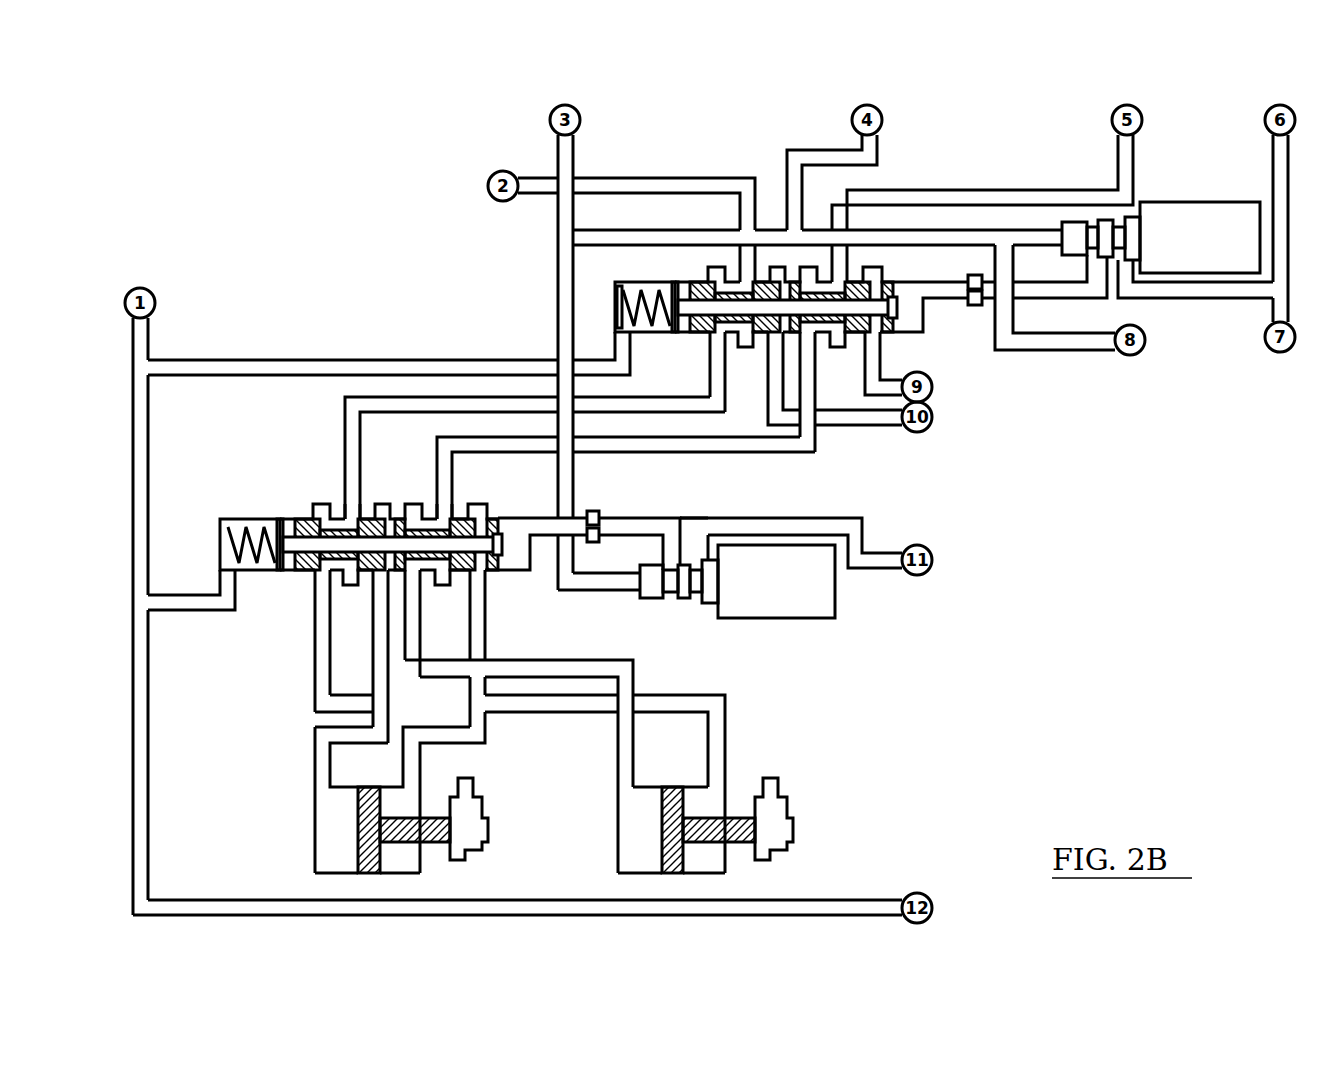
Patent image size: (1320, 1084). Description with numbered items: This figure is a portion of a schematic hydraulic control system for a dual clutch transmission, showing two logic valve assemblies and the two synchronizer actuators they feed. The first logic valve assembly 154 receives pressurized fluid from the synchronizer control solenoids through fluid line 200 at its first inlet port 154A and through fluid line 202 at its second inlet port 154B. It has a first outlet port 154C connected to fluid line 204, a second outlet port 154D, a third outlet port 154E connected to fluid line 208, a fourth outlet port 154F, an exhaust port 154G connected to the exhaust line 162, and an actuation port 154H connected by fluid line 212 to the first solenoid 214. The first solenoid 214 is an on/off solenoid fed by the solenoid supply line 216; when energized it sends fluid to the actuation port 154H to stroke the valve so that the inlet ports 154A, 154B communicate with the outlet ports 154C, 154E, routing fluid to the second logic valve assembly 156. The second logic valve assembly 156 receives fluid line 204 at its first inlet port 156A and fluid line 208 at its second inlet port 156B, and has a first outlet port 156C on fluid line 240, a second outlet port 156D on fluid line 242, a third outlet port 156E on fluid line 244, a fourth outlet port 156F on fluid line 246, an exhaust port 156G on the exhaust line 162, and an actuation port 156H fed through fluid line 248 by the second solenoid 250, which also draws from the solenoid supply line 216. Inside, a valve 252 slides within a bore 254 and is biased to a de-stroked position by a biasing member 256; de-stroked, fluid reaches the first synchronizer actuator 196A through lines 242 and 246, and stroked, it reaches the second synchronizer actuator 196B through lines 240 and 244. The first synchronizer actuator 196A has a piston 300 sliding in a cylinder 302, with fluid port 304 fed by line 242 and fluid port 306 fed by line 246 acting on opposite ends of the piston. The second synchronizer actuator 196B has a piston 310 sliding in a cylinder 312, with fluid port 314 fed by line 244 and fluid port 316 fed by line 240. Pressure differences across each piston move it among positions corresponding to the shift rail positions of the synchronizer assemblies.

The first logic valve assembly 154 is at (620, 283).
The first inlet port 154A is at (746, 282).
The second inlet port 154B is at (838, 282).
The first outlet port 154C is at (720, 336).
The second outlet port 154D is at (778, 336).
The third outlet port 154E is at (808, 336).
The fourth outlet port 154F is at (872, 336).
The exhaust port 154G is at (625, 330).
The actuation port 154H is at (912, 292).
The second logic valve assembly 156 is at (225, 519).
The first inlet port 156A is at (350, 519).
The second inlet port 156B is at (442, 519).
The first outlet port 156C is at (323, 575).
The second outlet port 156D is at (380, 575).
The third outlet port 156E is at (412, 575).
The fourth outlet port 156F is at (478, 575).
The exhaust port 156G is at (230, 580).
The actuation port 156H is at (527, 520).
The exhaust line 162 is at (178, 898).
The first synchronizer actuator 196A is at (383, 823).
The second synchronizer actuator 196B is at (687, 823).
The fluid line 200 is at (693, 178).
The fluid line 202 is at (1020, 190).
The fluid line 204 is at (388, 397).
The fluid line 208 is at (752, 455).
The fluid line 212 is at (1042, 298).
The first solenoid 214 is at (1220, 255).
The solenoid supply line 216 is at (577, 155).
The fluid line 240 is at (315, 702).
The fluid line 242 is at (315, 738).
The fluid line 244 is at (596, 660).
The fluid line 246 is at (487, 725).
The fluid line 248 is at (700, 518).
The second solenoid 250 is at (795, 593).
The valve 252 is at (620, 318).
The bore 254 is at (618, 300).
The biasing member 256 is at (248, 528).
The piston 300 is at (358, 870).
The piston housing or cylinder 302 is at (420, 868).
The fluid port 304 is at (323, 782).
The fluid port 306 is at (412, 780).
The piston 310 is at (662, 870).
The piston housing or cylinder 312 is at (725, 868).
The fluid port 314 is at (627, 782).
The fluid port 316 is at (718, 780).